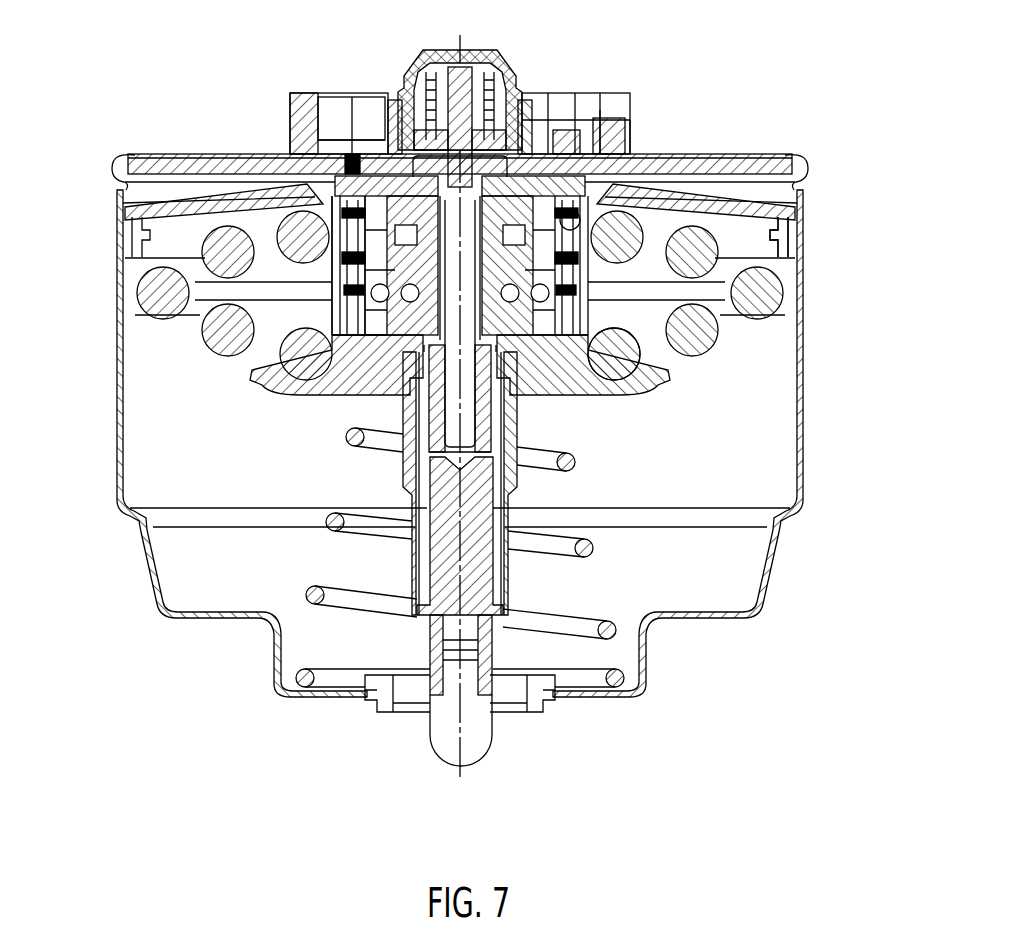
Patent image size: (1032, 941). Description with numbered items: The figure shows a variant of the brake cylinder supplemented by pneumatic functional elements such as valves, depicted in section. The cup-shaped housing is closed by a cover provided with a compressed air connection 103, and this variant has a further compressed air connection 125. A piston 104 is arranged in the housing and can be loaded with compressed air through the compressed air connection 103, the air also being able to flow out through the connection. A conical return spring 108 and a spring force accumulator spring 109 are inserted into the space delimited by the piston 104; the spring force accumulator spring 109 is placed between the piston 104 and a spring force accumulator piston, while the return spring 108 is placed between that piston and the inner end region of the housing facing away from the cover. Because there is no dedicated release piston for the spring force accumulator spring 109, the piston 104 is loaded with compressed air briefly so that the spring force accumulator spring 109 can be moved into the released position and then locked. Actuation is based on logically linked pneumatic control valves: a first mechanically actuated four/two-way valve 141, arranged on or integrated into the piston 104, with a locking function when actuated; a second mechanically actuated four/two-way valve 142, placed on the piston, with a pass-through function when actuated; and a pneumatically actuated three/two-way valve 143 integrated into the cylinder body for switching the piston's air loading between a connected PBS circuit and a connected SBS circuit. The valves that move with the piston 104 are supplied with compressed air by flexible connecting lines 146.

The compressed air connection 103 is at (366, 93).
The piston 104 is at (697, 205).
The return spring 108 is at (606, 632).
The spring force accumulator spring 109 is at (768, 243).
The further compressed air connection 125 is at (628, 93).
The first mechanically actuated 4/2-way valve 141 is at (345, 288).
The second mechanically actuated 4/2-way valve 142 is at (600, 265).
The pneumatically actuated 3/2-way valve 143 is at (628, 127).
The flexible connecting lines 146 is at (290, 153).